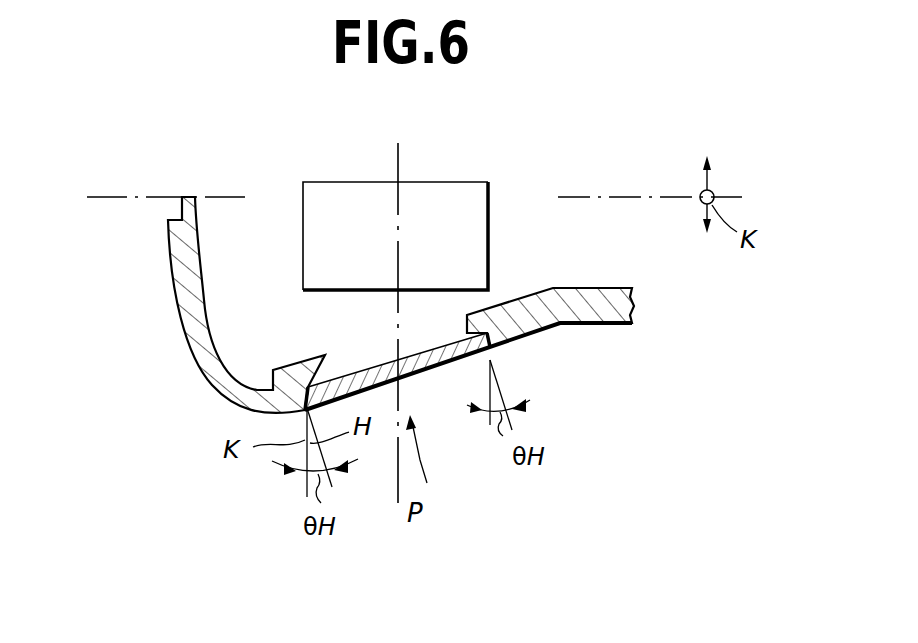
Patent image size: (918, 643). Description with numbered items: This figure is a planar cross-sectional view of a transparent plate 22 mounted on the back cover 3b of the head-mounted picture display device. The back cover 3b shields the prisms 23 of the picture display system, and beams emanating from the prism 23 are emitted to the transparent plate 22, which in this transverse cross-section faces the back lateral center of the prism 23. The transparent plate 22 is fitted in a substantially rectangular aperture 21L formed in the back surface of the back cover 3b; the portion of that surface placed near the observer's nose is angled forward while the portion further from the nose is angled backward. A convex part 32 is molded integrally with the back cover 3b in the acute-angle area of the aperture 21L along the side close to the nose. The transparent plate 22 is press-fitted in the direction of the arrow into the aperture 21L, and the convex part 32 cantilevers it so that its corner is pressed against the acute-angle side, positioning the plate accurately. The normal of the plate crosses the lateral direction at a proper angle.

The back cover 3b is at (202, 348).
The transparent plate 22 is at (435, 368).
The left aperture 21L is at (507, 349).
The convex part 32 is at (500, 335).
The prism 23 is at (458, 195).